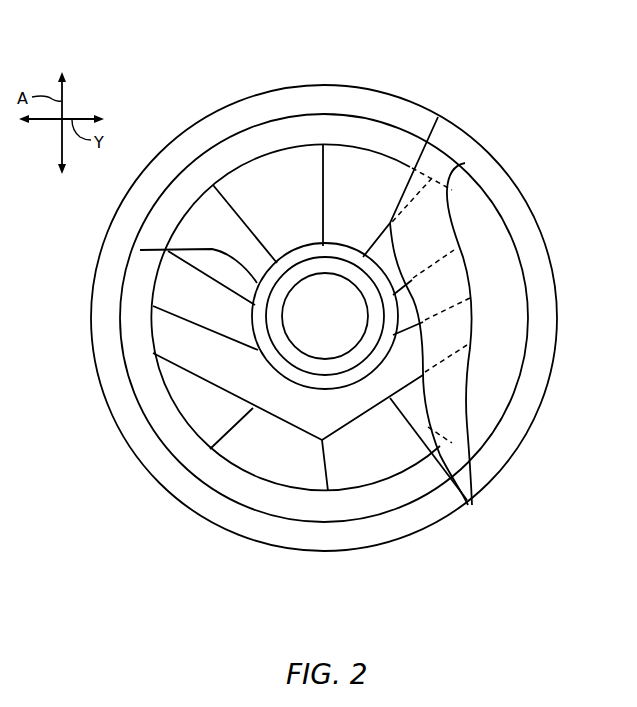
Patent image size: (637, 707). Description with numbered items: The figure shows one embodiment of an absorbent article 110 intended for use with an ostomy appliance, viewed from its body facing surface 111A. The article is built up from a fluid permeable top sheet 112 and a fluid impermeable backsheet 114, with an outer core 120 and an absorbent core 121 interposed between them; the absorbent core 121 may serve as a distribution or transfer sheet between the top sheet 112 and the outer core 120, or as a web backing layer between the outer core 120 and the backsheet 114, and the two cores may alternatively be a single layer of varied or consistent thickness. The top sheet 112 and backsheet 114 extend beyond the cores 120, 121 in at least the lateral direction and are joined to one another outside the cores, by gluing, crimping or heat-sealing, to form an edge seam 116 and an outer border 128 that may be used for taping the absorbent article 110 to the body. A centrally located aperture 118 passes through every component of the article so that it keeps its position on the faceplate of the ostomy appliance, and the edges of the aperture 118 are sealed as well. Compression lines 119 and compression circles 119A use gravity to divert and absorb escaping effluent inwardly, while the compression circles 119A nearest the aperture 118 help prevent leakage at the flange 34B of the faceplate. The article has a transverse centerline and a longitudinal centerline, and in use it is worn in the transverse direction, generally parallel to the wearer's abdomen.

The absorbent article 110 is at (471, 82).
The body facing surface 111A is at (195, 388).
The fluid permeable top sheet 112 is at (210, 305).
The fluid impermeable backsheet 114 is at (543, 356).
The edge seam 116 is at (413, 512).
The central aperture 118 is at (292, 263).
The compression lines 119 is at (237, 217).
The compression circles 119A is at (152, 306).
The outer core 120 is at (458, 161).
The absorbent core 121 is at (490, 233).
The outer border 128 is at (543, 273).
The flange 34B is at (297, 357).